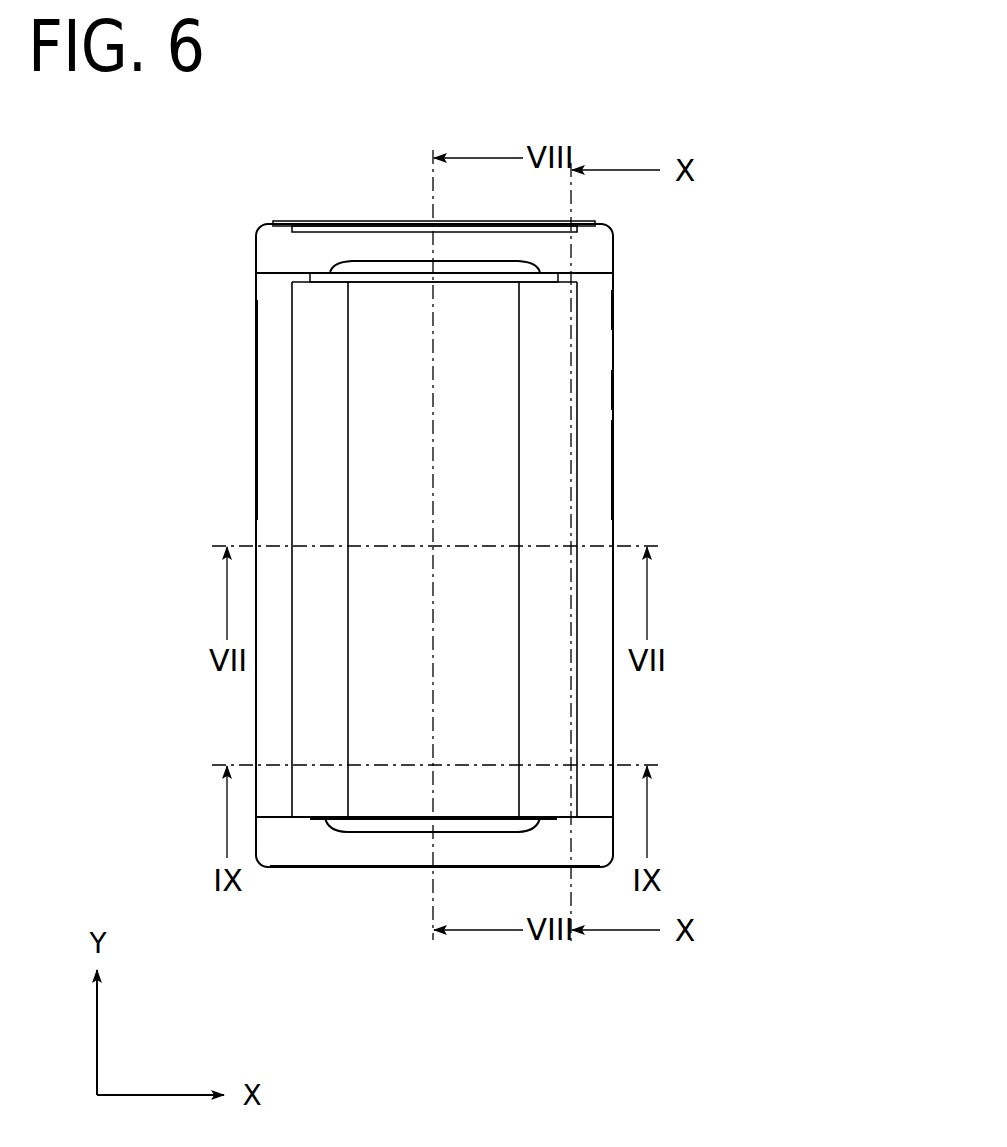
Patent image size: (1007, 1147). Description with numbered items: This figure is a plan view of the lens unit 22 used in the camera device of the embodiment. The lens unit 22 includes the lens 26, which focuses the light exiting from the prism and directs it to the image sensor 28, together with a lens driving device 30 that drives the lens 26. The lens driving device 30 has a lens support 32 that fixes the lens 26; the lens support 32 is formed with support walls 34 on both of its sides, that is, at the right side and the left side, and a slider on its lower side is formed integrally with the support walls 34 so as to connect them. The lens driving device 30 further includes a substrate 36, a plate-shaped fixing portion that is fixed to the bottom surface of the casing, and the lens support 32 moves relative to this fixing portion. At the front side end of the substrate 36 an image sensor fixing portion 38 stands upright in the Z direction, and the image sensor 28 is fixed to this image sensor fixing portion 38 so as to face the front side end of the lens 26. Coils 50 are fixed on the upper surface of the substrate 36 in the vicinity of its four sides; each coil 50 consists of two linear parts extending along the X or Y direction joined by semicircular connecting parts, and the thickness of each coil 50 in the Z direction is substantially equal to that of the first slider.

The lens unit 22 is at (752, 212).
The lens 26 is at (311, 463).
The image sensor 28 is at (376, 228).
The lens driving device 30 is at (613, 312).
The lens support 32 is at (613, 390).
The support wall 34 is at (256, 400).
The substrate 36 is at (298, 854).
The image sensor fixing portion 38 is at (275, 222).
The coil 50 is at (540, 262).